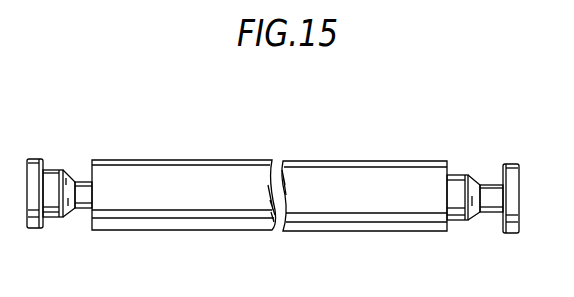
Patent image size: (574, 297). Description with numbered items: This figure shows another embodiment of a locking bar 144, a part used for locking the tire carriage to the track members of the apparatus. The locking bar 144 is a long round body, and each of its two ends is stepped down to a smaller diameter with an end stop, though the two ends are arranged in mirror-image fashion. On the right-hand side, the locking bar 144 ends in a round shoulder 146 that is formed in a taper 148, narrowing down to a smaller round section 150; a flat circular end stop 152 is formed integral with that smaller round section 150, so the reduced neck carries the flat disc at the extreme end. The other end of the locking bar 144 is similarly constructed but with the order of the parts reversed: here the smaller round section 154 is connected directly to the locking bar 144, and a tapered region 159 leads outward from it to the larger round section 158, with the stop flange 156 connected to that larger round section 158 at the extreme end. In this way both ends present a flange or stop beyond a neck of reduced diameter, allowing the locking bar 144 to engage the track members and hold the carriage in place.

The locking bar 144 is at (202, 159).
The round shoulder 146 is at (457, 174).
The taper 148 is at (475, 220).
The smaller round section 150 is at (494, 185).
The flat circular end stop 152 is at (513, 234).
The smaller round section 154 is at (81, 181).
The stop flange 156 is at (37, 158).
The larger round section 158 is at (52, 220).
The tapered shoulder 159 is at (70, 218).